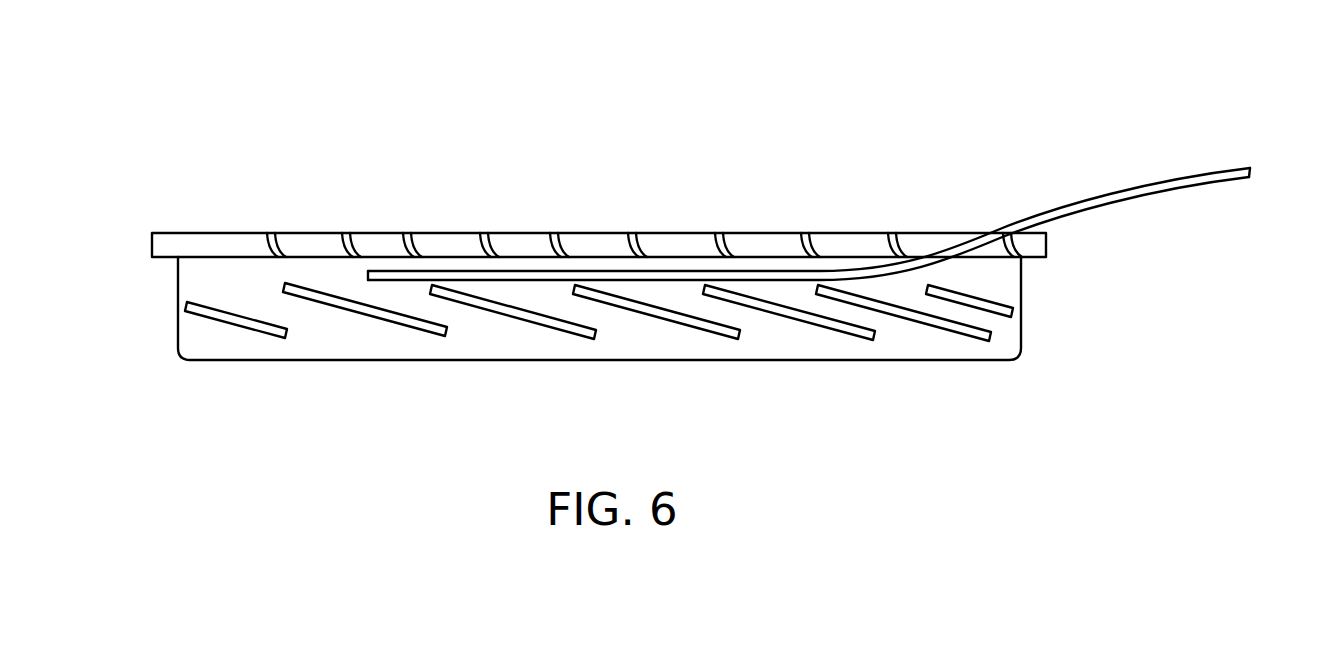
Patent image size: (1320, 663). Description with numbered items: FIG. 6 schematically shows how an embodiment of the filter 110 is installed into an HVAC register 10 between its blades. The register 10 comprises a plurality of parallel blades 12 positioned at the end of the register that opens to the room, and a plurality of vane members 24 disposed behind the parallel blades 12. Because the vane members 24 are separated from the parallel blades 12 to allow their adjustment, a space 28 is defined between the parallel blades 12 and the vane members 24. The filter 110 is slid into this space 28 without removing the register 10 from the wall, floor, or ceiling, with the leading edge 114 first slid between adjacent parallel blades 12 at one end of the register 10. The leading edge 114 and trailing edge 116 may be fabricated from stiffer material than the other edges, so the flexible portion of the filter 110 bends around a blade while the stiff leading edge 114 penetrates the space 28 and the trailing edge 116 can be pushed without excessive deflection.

The register 10 is at (692, 183).
The parallel blades 12 is at (270, 232).
The vane members 24 is at (267, 342).
The space 28 is at (198, 280).
The filter 110 is at (831, 158).
The leading edge 114 is at (374, 271).
The trailing edge 116 is at (1244, 186).